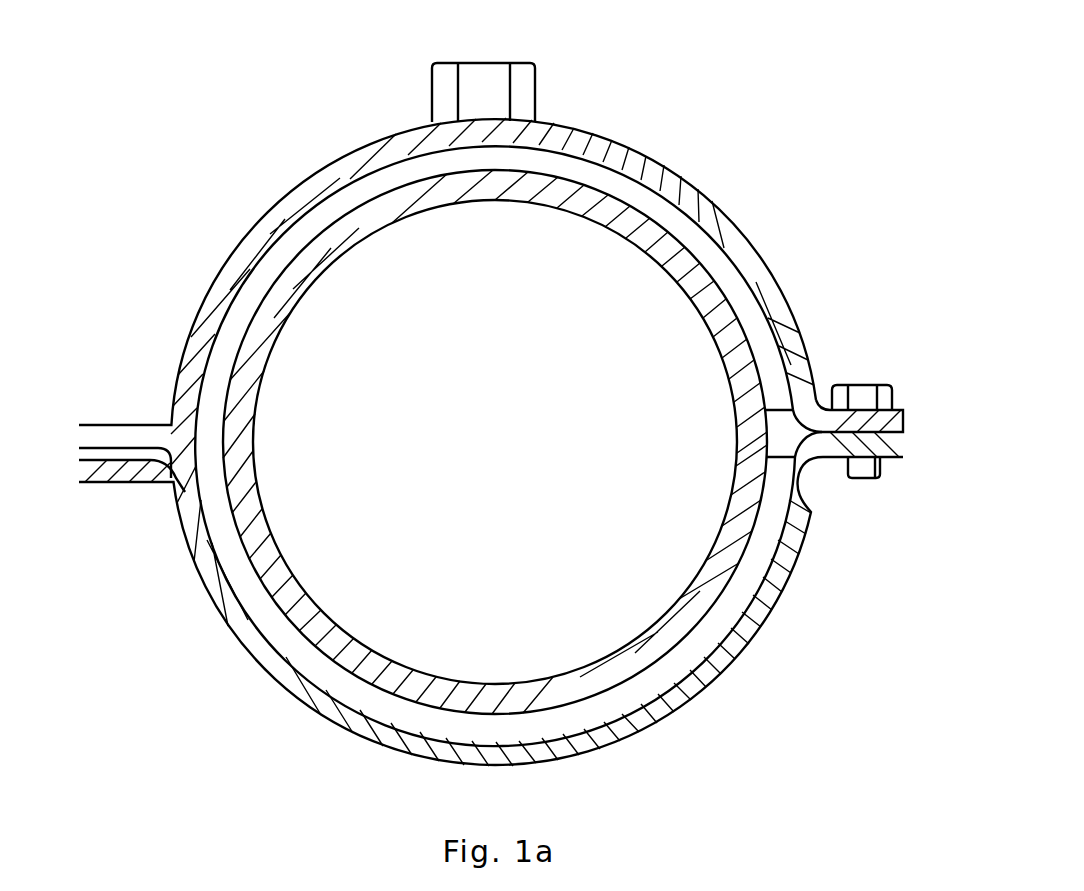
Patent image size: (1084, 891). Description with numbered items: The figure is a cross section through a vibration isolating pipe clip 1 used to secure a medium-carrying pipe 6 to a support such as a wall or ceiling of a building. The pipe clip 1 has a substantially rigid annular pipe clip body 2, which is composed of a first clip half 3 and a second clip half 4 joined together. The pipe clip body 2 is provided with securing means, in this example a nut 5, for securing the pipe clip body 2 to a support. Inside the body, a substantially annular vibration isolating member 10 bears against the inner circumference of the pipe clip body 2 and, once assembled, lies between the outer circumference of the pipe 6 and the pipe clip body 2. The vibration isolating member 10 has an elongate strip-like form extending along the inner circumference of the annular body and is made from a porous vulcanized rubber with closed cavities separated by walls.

The vibration isolating pipe clip 1 is at (491, 389).
The pipe clip body 2 is at (491, 442).
The first clip half 3 is at (712, 675).
The second clip half 4 is at (758, 272).
The nut 5 is at (525, 81).
The pipe 6 is at (333, 645).
The vibration isolating member 10 is at (418, 718).